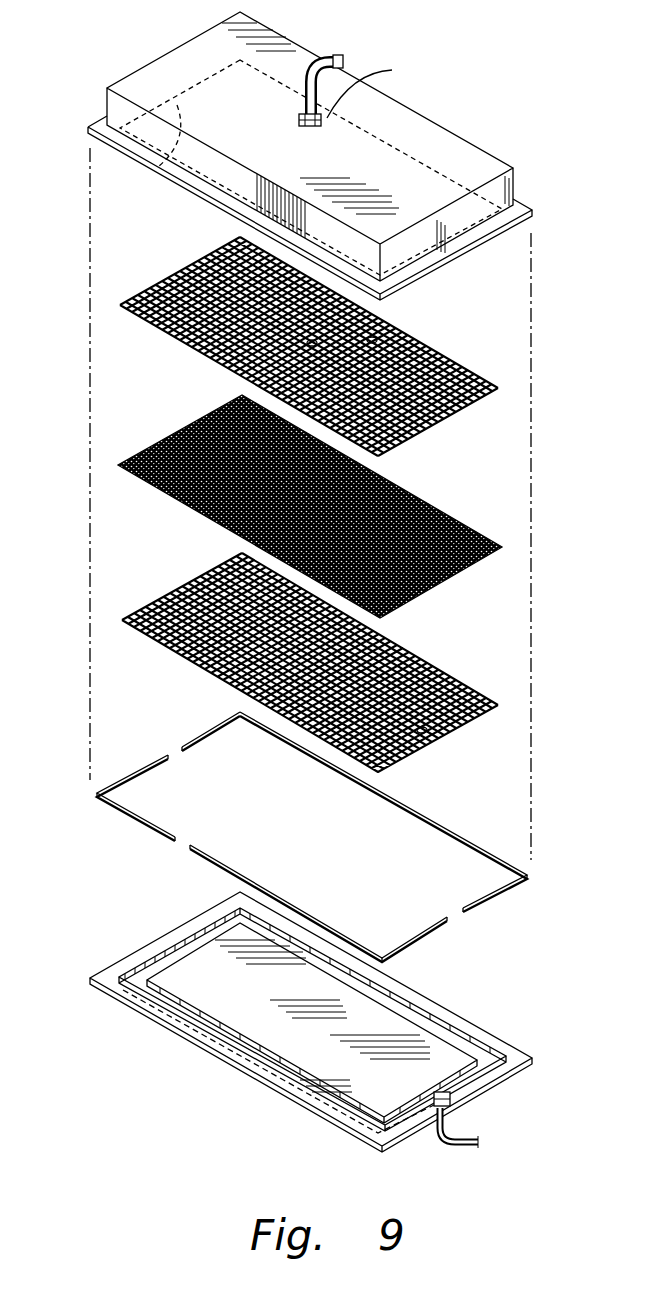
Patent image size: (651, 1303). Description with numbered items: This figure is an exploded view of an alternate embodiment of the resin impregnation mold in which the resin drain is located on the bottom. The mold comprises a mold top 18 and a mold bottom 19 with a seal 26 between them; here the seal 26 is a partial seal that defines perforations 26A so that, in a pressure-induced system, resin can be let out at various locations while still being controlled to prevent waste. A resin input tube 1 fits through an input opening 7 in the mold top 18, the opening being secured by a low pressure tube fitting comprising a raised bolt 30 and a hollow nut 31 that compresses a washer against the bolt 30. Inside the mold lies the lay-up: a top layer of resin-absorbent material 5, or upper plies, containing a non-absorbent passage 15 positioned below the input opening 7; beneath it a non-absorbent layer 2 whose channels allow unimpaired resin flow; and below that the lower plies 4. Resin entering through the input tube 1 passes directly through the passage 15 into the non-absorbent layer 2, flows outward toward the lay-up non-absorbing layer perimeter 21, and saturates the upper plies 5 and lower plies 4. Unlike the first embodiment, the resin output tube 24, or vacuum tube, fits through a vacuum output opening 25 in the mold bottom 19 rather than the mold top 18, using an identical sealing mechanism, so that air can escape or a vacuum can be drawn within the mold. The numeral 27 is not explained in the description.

The resin input tube 1 is at (344, 50).
The non-absorbent layer 2 is at (458, 518).
The lower plies 4 is at (462, 683).
The resin-absorbent material 5 is at (457, 358).
The input opening 7 is at (322, 132).
The non-absorbent passage 15 is at (374, 338).
The mold top 18 is at (515, 185).
The mold bottom 19 is at (112, 993).
The lay-up non-absorbing layer perimeter 21 is at (158, 168).
The resin output tube 24 is at (467, 1120).
The output opening 25 is at (470, 1102).
The seal 26 is at (453, 830).
The perforations 26A is at (170, 740).
The cavity 27 is at (206, 62).
The raised bolt 30 is at (476, 258).
The hollow nut 31 is at (380, 87).